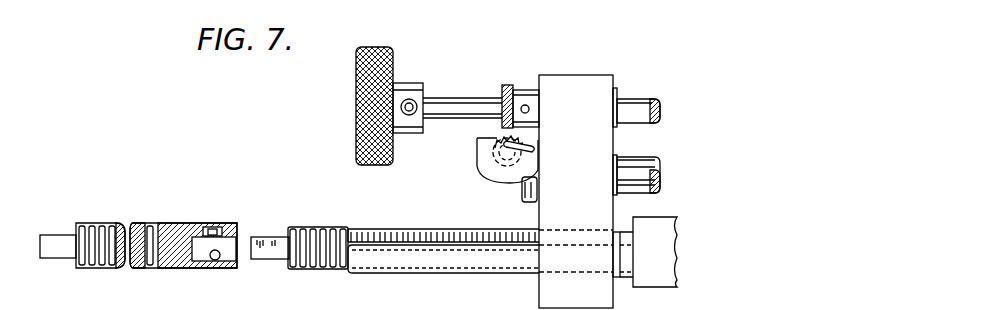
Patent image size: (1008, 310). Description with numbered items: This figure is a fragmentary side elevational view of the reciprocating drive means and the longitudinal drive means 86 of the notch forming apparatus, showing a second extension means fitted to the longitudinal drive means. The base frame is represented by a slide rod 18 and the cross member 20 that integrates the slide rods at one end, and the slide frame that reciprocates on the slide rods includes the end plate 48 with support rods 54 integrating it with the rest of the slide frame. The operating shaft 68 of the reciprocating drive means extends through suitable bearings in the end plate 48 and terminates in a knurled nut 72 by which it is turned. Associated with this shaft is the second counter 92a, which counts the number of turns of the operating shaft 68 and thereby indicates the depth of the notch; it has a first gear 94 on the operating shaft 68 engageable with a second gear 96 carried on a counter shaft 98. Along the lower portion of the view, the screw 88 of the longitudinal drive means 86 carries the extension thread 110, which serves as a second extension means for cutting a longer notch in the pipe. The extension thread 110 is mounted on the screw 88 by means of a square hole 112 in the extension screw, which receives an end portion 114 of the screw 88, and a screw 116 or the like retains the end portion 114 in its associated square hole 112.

The slide rods 18 is at (457, 262).
The cross member 20 is at (668, 238).
The end plate 48 is at (600, 143).
The support rods 54 is at (650, 169).
The operating shaft 68 is at (458, 98).
The knurled nut 72 is at (356, 98).
The longitudinal drive means 86 is at (471, 220).
The screw 88 is at (373, 228).
The second counter 92a is at (478, 158).
The first gear 94 is at (505, 84).
The second gear 96 is at (497, 141).
The counter shaft 98 is at (533, 146).
The extension thread 110 is at (172, 223).
The square hole 112 is at (218, 260).
The end portion 114 is at (268, 236).
The screw 116 is at (215, 226).